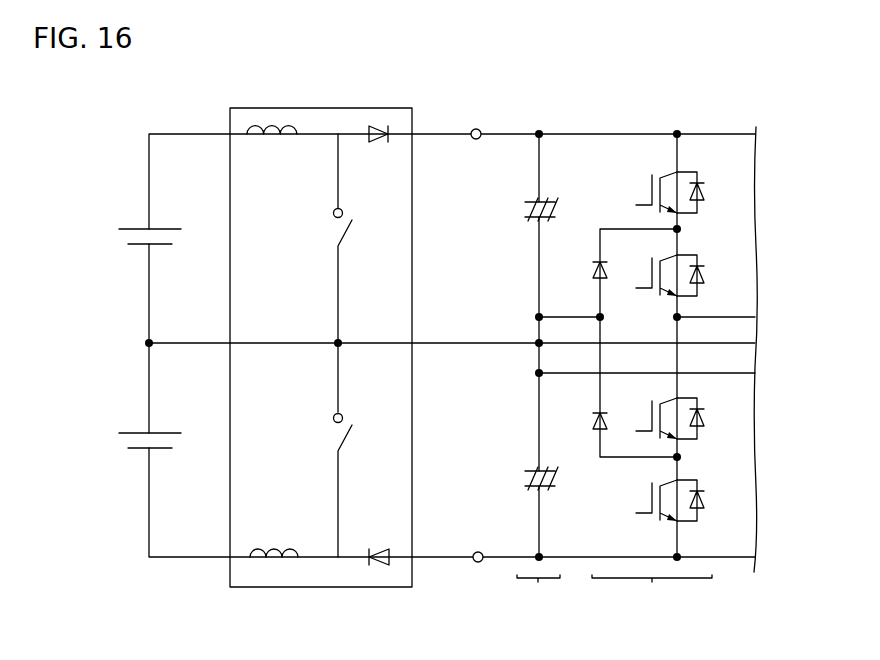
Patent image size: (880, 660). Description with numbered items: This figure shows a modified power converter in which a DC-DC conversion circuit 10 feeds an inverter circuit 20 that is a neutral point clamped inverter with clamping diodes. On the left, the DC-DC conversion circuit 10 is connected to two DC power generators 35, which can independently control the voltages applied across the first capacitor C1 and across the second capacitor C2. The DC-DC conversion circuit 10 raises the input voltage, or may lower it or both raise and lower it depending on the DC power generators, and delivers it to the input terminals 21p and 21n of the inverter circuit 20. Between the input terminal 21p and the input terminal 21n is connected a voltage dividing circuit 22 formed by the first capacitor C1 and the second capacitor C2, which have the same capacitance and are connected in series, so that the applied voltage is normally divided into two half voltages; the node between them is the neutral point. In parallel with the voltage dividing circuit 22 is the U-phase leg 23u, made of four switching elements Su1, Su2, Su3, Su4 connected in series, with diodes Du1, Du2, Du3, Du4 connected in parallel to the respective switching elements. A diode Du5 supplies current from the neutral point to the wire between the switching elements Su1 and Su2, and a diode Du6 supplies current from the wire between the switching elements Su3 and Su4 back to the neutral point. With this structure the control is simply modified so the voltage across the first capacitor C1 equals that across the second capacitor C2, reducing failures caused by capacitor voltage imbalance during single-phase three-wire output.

The DC-DC conversion circuit 10 is at (384, 108).
The inverter circuit 20 is at (755, 98).
The input terminal 21p is at (477, 128).
The input terminal 21n is at (477, 563).
The voltage dividing circuit 22 is at (538, 596).
The U-phase leg 23u is at (652, 596).
The DC power generator 35 is at (166, 229).
The first capacitor C1 is at (542, 206).
The second capacitor C2 is at (547, 475).
The switching element Su1 is at (648, 185).
The switching element Su2 is at (650, 275).
The switching element Su3 is at (650, 417).
The switching element Su4 is at (650, 500).
The diode Du1 is at (700, 188).
The diode Du2 is at (700, 274).
The diode Du3 is at (700, 416).
The diode Du4 is at (700, 499).
The diode Du5 is at (595, 270).
The diode Du6 is at (592, 413).